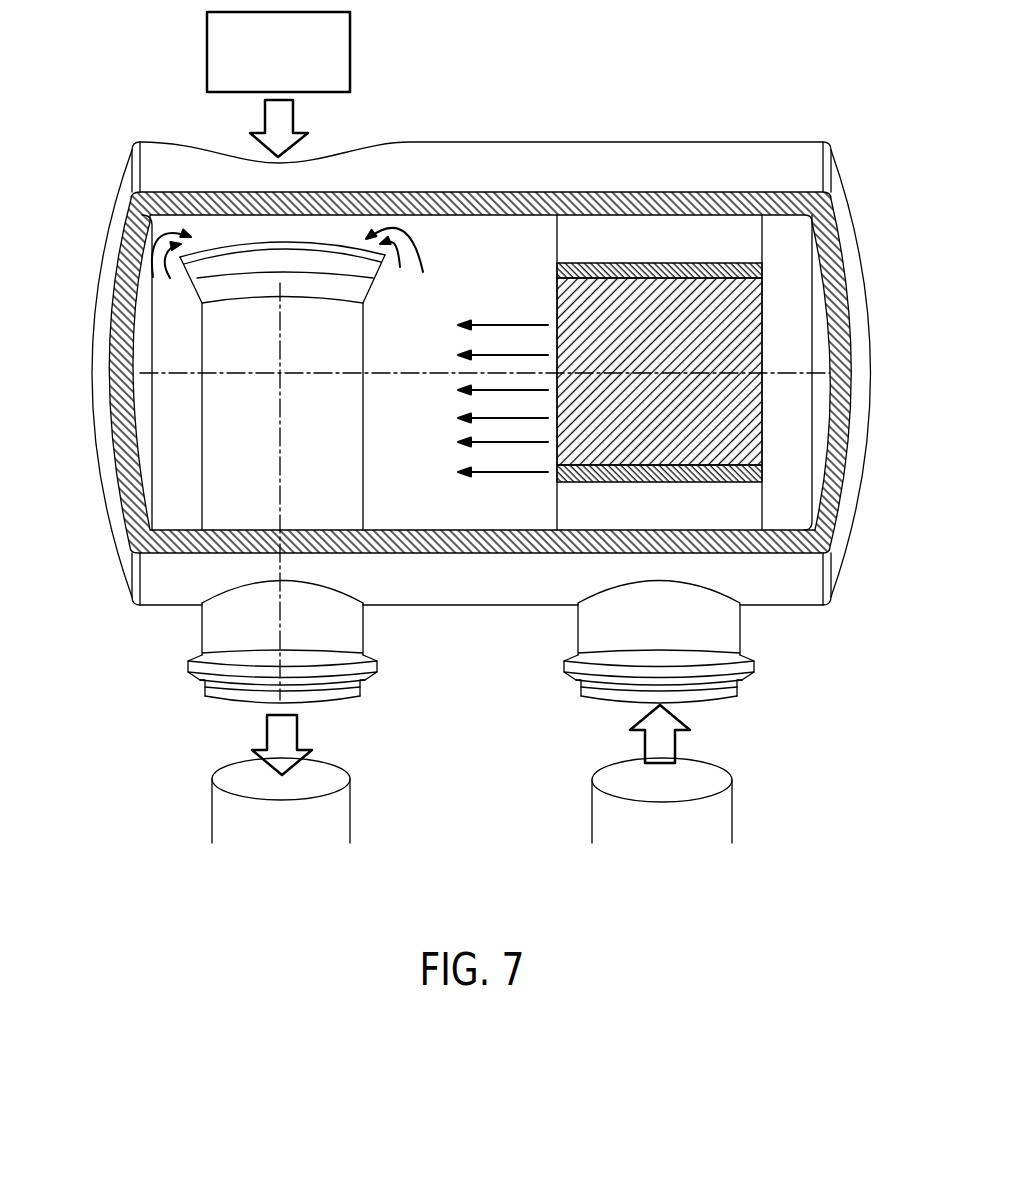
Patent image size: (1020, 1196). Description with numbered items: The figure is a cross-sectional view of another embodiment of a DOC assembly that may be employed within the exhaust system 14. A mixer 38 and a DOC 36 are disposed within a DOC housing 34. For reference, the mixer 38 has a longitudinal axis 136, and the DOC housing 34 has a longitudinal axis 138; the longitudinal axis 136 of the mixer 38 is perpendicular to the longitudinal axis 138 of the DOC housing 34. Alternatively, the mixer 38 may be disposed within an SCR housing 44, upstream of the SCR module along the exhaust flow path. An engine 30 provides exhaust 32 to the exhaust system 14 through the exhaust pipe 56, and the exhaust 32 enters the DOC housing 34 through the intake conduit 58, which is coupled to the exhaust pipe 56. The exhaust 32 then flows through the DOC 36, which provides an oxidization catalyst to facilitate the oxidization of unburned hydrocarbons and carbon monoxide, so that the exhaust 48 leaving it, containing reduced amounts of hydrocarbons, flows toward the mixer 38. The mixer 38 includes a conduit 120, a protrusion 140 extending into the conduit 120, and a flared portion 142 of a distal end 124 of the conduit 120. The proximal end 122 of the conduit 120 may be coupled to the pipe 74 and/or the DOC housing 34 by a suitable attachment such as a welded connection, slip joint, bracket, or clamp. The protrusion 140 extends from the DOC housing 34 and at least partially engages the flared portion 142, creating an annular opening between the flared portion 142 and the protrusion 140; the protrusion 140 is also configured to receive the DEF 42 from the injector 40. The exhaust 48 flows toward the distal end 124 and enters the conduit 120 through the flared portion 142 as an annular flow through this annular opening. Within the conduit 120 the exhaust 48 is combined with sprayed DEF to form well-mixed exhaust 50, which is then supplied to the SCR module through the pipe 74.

The exhaust system 14 is at (97, 203).
The engine 30 is at (703, 880).
The exhaust 32 is at (673, 743).
The DOC housing 34 is at (830, 141).
The DOC 36 is at (753, 458).
The mixer 38 is at (187, 495).
The injector 40 is at (350, 52).
The DEF 42 is at (293, 115).
The SCR housing 44 is at (258, 873).
The exhaust 48 is at (418, 248).
The well-mixed exhaust 50 is at (267, 732).
The exhaust pipe 56 is at (732, 808).
The intake conduit 58 is at (742, 630).
The pipe 74 is at (210, 808).
The conduit 120 is at (365, 418).
The proximal end 122 is at (377, 673).
The distal end 124 is at (312, 257).
The longitudinal axis 136 is at (280, 603).
The longitudinal axis 138 is at (177, 373).
The protrusion 140 is at (332, 232).
The flared portion 142 is at (197, 263).